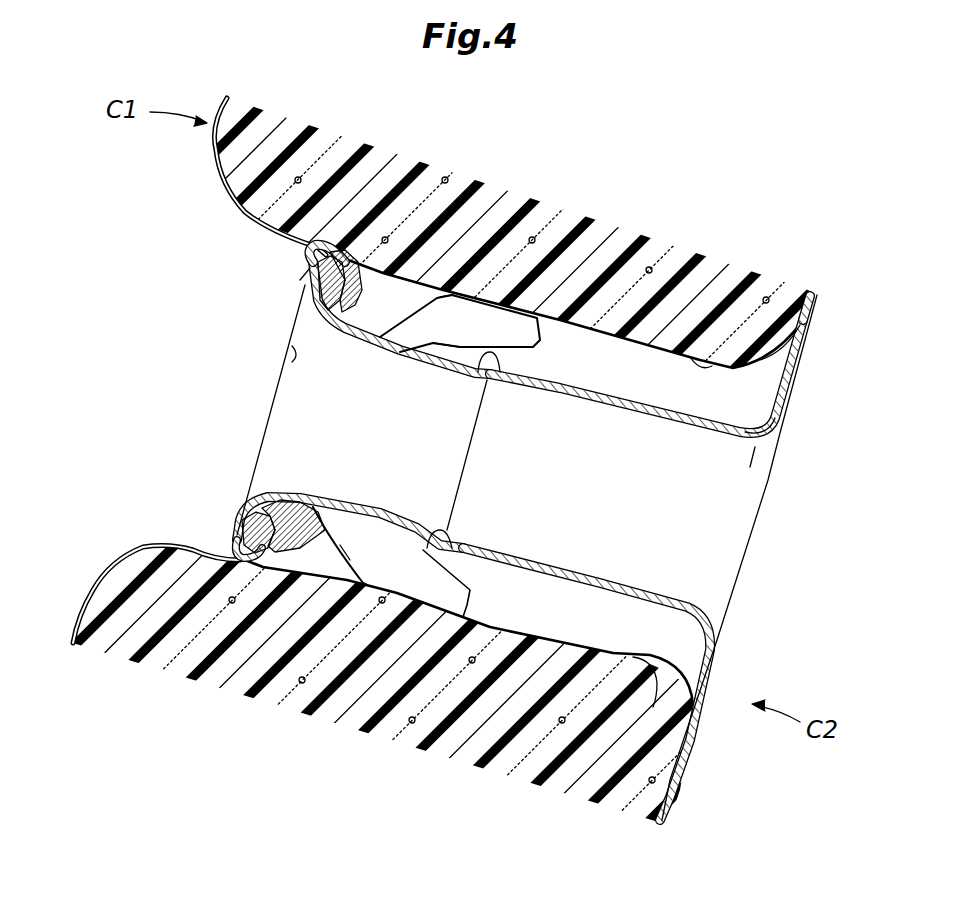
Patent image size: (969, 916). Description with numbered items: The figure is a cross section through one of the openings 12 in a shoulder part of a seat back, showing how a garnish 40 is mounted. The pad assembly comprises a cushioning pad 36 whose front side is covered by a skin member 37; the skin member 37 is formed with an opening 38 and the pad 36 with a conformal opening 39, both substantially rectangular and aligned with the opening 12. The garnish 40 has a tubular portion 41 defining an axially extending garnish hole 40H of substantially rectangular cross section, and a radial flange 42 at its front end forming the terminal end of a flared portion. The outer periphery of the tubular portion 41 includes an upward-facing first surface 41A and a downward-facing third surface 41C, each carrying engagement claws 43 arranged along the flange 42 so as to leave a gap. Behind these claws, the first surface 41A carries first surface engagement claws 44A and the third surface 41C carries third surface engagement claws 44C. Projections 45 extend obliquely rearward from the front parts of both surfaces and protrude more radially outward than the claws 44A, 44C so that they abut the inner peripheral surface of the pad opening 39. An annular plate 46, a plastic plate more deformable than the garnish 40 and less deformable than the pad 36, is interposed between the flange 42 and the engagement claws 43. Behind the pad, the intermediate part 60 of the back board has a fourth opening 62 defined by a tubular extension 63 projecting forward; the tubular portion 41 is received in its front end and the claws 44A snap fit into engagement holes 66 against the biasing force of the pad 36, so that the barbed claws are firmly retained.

The opening 12 is at (238, 372).
The pad 36 is at (492, 210).
The skin member 37 is at (218, 158).
The opening 38 is at (312, 295).
The opening 39 is at (710, 367).
The garnish 40 is at (256, 418).
The garnish hole 40H is at (292, 352).
The tubular portion 41 is at (428, 350).
The first surface 41A is at (420, 300).
The third surface 41C is at (317, 513).
The radial flange 42 is at (310, 266).
The engagement claw 43 is at (350, 290).
The first surface engagement claw 44A is at (470, 390).
The third surface engagement claw 44C is at (432, 530).
The projection 45 is at (493, 327).
The annular plate 46 is at (338, 248).
The intermediate part 60 is at (800, 382).
The fourth opening 62 is at (778, 440).
The tubular extension 63 is at (690, 423).
The engagement hole 66 is at (498, 352).